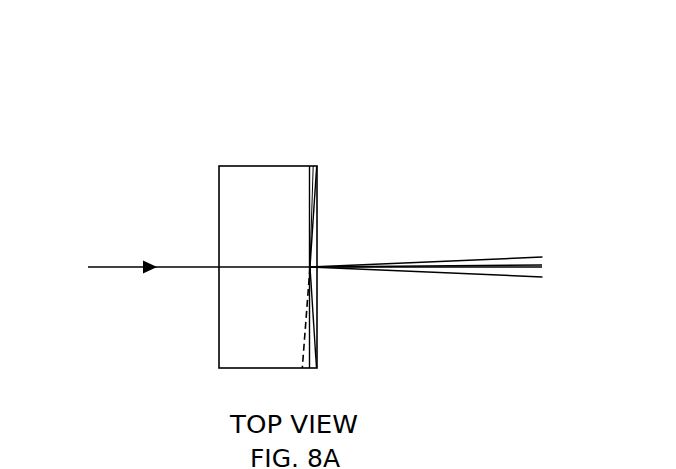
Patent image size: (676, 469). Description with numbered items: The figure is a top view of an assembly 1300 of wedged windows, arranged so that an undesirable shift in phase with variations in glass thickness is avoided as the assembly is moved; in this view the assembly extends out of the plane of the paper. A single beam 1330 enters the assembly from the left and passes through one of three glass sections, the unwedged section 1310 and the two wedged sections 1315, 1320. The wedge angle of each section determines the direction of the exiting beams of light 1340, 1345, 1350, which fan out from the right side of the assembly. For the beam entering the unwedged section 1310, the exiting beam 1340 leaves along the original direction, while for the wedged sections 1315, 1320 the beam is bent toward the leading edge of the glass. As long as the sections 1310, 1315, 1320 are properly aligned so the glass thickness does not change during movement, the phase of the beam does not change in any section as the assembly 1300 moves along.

The assembly 1300 is at (235, 115).
The unwedged section 1310 is at (305, 173).
The wedged glass section 1315 is at (315, 353).
The wedged glass section 1320 is at (302, 353).
The single beam 1330 is at (182, 263).
The exiting beam of light 1340 is at (483, 264).
The exiting beam of light 1345 is at (516, 258).
The exiting beam of light 1350 is at (516, 280).